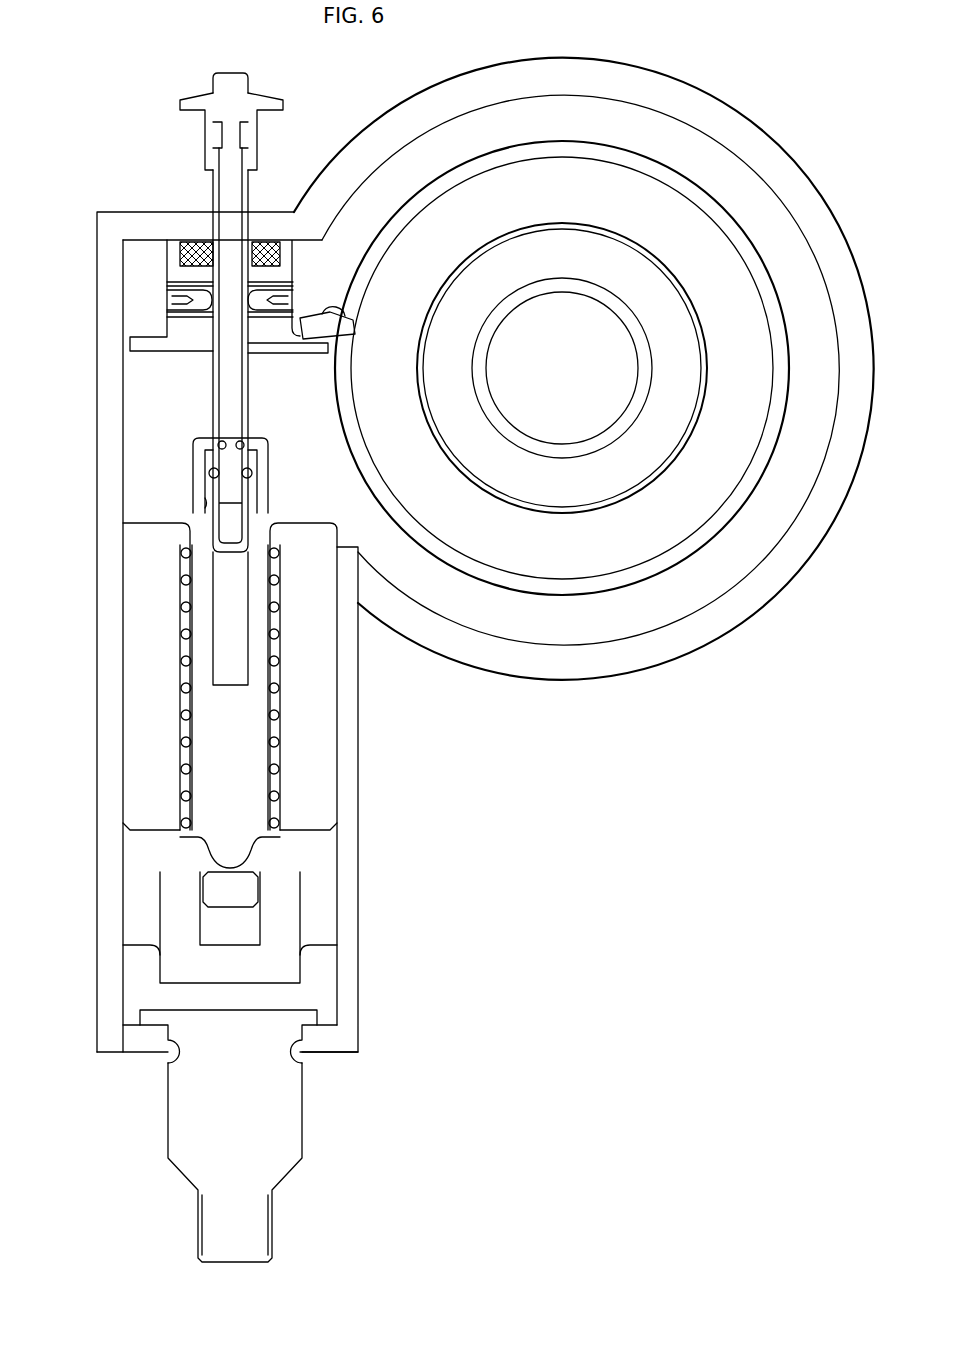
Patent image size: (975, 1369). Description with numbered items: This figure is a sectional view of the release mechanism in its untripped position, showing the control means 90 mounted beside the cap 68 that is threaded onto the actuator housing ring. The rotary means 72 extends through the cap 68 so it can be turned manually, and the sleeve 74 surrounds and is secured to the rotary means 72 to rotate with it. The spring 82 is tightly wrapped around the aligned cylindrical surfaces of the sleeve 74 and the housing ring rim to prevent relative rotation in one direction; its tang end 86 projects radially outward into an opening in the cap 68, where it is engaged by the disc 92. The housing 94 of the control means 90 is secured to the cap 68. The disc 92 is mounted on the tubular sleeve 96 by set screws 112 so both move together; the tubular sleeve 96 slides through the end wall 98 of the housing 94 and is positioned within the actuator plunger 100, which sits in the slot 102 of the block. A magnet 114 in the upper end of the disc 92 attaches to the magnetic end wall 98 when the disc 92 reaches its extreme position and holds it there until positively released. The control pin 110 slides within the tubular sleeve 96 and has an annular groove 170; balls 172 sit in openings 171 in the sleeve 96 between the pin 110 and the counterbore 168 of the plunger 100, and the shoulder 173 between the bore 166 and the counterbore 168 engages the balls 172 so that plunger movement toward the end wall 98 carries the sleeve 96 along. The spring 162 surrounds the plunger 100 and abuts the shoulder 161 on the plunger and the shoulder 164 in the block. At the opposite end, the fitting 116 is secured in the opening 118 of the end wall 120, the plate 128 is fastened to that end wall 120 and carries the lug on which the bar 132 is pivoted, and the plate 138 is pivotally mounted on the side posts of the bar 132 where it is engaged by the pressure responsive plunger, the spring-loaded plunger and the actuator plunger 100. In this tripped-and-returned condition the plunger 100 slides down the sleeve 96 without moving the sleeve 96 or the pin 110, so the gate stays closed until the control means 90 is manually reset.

The cap 68 is at (648, 680).
The rotary means 72 is at (517, 422).
The sleeve 74 is at (440, 198).
The spring 82 is at (660, 160).
The tang end 86 is at (345, 316).
The control means 90 is at (115, 1103).
The disc 92 is at (303, 353).
The housing 94 is at (97, 572).
The tubular sleeve 96 is at (257, 152).
The end wall 98 is at (152, 212).
The actuator plunger 100 is at (255, 855).
The slot 102 is at (178, 826).
The control pin 110 is at (250, 78).
The set screws 112 is at (176, 300).
The magnet 114 is at (281, 262).
The fitting 116 is at (302, 1137).
The opening 118 is at (170, 1062).
The end wall 120 is at (300, 1065).
The plate 128 is at (295, 978).
The bar 132 is at (213, 940).
The plate 138 is at (240, 907).
The shoulder 161 is at (274, 810).
The spring 162 is at (283, 685).
The shoulder 164 is at (305, 530).
The bore 166 is at (243, 660).
The counterbore 168 is at (268, 505).
The annular groove 170 is at (218, 445).
The openings 171 is at (209, 472).
The balls 172 is at (252, 472).
The shoulder 173 is at (205, 502).